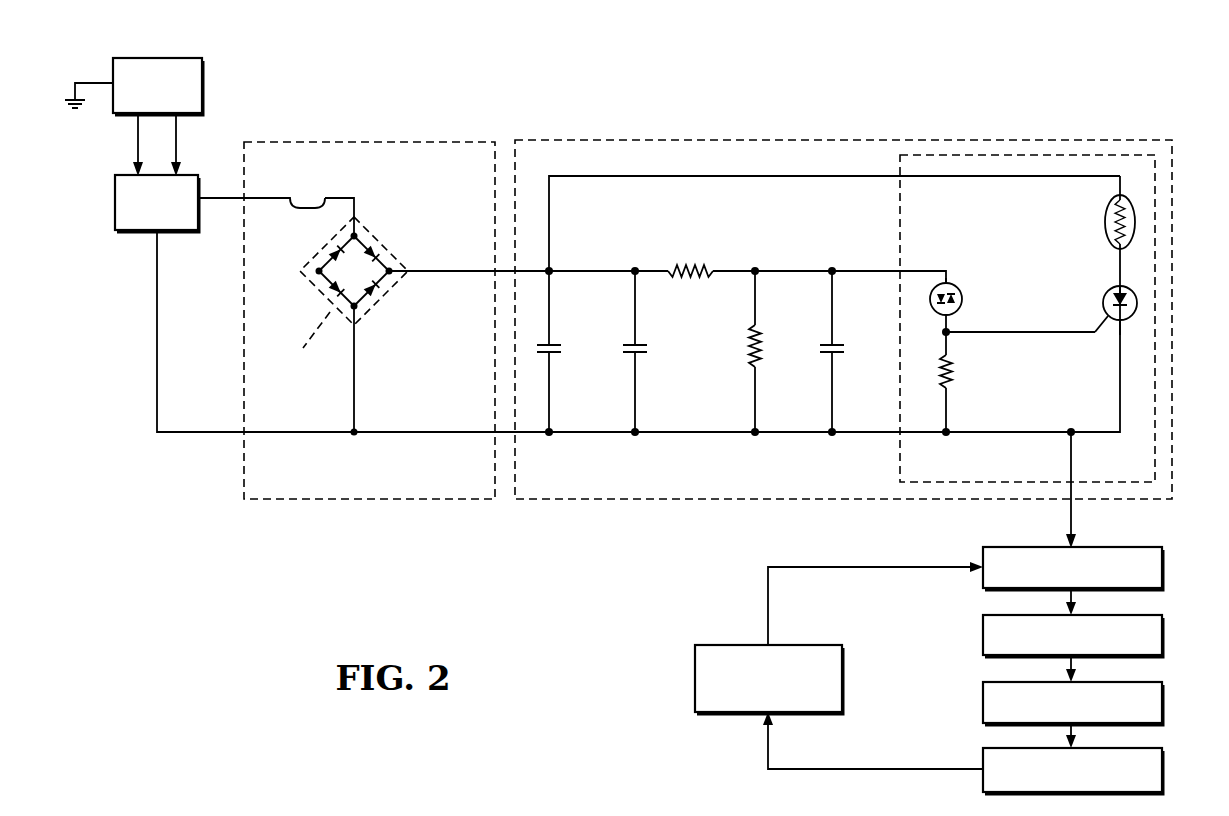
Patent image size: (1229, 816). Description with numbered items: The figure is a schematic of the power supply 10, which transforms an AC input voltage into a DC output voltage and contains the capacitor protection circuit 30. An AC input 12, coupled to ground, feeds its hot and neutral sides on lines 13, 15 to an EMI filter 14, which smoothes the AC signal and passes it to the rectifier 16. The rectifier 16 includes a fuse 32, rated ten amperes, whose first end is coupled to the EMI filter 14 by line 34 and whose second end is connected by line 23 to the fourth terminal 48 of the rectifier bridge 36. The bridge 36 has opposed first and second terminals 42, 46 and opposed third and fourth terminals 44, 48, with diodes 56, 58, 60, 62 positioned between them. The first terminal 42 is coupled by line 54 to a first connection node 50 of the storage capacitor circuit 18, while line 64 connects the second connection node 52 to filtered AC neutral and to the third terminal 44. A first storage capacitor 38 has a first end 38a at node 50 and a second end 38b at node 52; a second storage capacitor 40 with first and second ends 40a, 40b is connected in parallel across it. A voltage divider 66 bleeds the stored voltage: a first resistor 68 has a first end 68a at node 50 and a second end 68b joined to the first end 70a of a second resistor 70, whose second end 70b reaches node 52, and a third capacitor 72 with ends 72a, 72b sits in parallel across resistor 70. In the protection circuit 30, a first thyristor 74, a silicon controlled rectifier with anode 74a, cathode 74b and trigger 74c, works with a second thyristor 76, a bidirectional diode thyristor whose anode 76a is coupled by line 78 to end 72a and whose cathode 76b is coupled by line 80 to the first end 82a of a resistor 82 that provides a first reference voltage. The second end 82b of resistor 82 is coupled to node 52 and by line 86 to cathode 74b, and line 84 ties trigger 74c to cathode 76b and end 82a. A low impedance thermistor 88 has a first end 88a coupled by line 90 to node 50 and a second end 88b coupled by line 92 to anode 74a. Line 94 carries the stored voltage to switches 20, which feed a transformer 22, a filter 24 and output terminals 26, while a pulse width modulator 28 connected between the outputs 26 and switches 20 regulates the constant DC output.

The power supply 10 is at (350, 130).
The AC input 12 is at (202, 70).
The line 13 is at (138, 142).
The EMI filter 14 is at (175, 232).
The line 15 is at (176, 142).
The AC rectifier 16 is at (372, 499).
The storage capacitor circuit 18 is at (595, 499).
The switches 20 is at (983, 554).
The transformer 22 is at (983, 626).
The line 23 is at (348, 200).
The filter 24 is at (983, 693).
The output terminals 26 is at (983, 757).
The pulse width modulator 28 is at (722, 645).
The capacitor protection circuit 30 is at (926, 155).
The fuse 32 is at (287, 198).
The line 34 is at (232, 198).
The rectifier bridge 36 is at (341, 291).
The first storage capacitor 38 is at (575, 351).
The first end 38a is at (552, 296).
The second end 38b is at (552, 385).
The second storage capacitor 40 is at (662, 351).
The first end 40a is at (638, 296).
The second end 40b is at (638, 385).
The first terminal 42 is at (391, 270).
The third terminal 44 is at (358, 310).
The second terminal 46 is at (317, 268).
The fourth terminal 48 is at (375, 248).
The first connection node 50 is at (552, 268).
The second connection node 52 is at (551, 435).
The line 54 is at (482, 271).
The diode 56 is at (373, 259).
The diode 58 is at (372, 284).
The diode 60 is at (335, 285).
The diode 62 is at (334, 259).
The line 64 is at (217, 432).
The voltage divider 66 is at (777, 309).
The first resistor 68 is at (692, 279).
The first end 68a is at (657, 268).
The second end 68b is at (728, 268).
The second resistor 70 is at (758, 368).
The first end 70a is at (758, 316).
The second end 70b is at (758, 398).
The third capacitor 72 is at (852, 351).
The first end 72a is at (835, 290).
The second end 72b is at (835, 398).
The first thyristor 74 is at (1127, 331).
The anode 74a is at (1130, 289).
The cathode 74b is at (1128, 316).
The trigger 74c is at (1105, 306).
The second thyristor 76 is at (970, 290).
The anode 76a is at (952, 287).
The cathode 76b is at (953, 312).
The line 78 is at (858, 268).
The line 80 is at (941, 334).
The resistor 82 is at (974, 390).
The first end 82a is at (950, 350).
The second end 82b is at (949, 405).
The line 84 is at (1036, 334).
The line 86 is at (1035, 434).
The low impedance thermistor 88 is at (1129, 221).
The first end 88a is at (1112, 197).
The second end 88b is at (1112, 250).
The line 90 is at (917, 178).
The line 92 is at (1122, 267).
The line 94 is at (1073, 525).